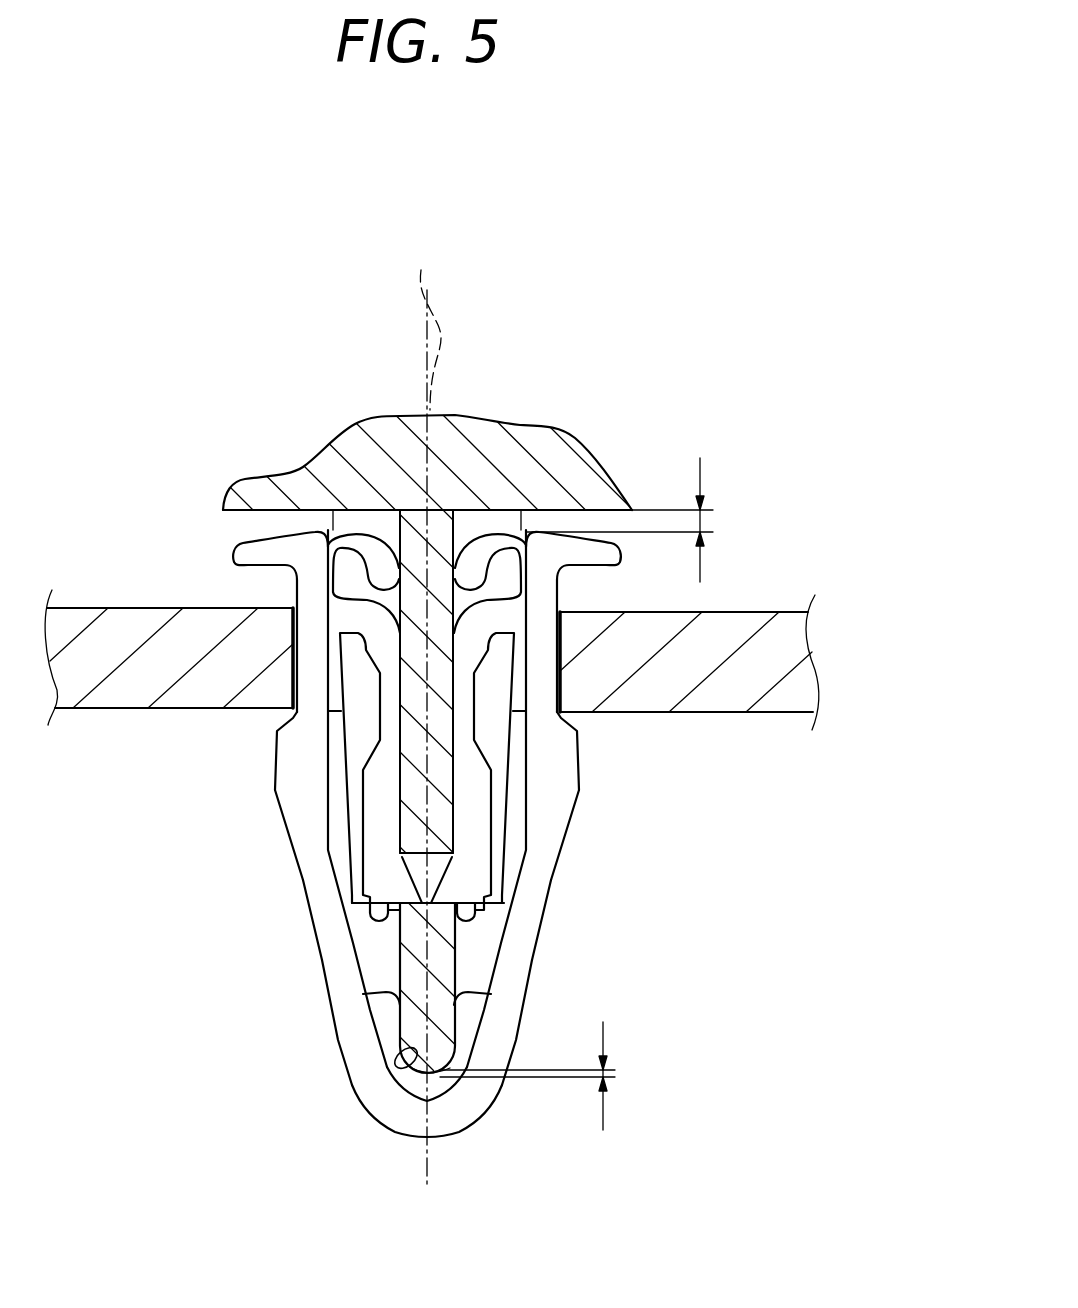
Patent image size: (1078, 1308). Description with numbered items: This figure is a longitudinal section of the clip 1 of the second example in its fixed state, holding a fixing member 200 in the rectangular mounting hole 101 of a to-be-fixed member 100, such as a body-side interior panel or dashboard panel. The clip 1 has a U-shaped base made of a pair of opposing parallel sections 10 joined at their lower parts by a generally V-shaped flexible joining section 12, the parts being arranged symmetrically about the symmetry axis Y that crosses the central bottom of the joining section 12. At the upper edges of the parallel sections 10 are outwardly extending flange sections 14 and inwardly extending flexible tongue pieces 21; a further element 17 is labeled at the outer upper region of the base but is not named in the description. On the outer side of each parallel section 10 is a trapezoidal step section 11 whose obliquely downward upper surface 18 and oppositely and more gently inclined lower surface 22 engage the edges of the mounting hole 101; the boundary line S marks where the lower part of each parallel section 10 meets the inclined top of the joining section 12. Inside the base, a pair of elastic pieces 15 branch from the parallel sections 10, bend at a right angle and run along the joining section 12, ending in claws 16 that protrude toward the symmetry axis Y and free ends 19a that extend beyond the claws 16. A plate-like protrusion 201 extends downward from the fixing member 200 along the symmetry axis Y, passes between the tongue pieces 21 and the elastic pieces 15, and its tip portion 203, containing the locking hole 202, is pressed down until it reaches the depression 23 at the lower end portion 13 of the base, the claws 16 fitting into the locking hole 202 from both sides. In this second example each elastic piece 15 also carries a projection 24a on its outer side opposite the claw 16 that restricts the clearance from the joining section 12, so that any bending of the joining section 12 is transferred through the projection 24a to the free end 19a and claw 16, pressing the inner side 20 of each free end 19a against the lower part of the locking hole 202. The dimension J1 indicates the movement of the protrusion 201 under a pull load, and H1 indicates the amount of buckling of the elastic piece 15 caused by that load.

The clip 1 is at (529, 716).
The parallel sections 10 is at (280, 654).
The to-be-fixed member 100 is at (785, 582).
The mounting hole 101 is at (560, 687).
The step sections 11 is at (278, 757).
The joining section 12 is at (347, 1012).
The lower end portion 13 is at (388, 1118).
The flange sections 14 is at (300, 508).
The elastic pieces 15 is at (340, 815).
The claws 16 is at (350, 893).
The elastic flange 17 is at (292, 594).
The upper surface 18 is at (277, 722).
The free end 19a is at (405, 935).
The inner side 20 is at (397, 1035).
The fixing member 200 is at (638, 442).
The protrusion 201 is at (277, 740).
The locking hole 202 is at (505, 868).
The tip portion 203 is at (456, 1020).
The flexible tongue pieces 21 is at (356, 540).
The lower surface 22 is at (278, 807).
The depression 23 is at (410, 1052).
The projection 24a is at (375, 922).
The amount of buckling H1 is at (642, 520).
The amount of movement of the protrusion J1 is at (542, 1076).
The boundary line S is at (335, 880).
The symmetry axis Y is at (427, 713).